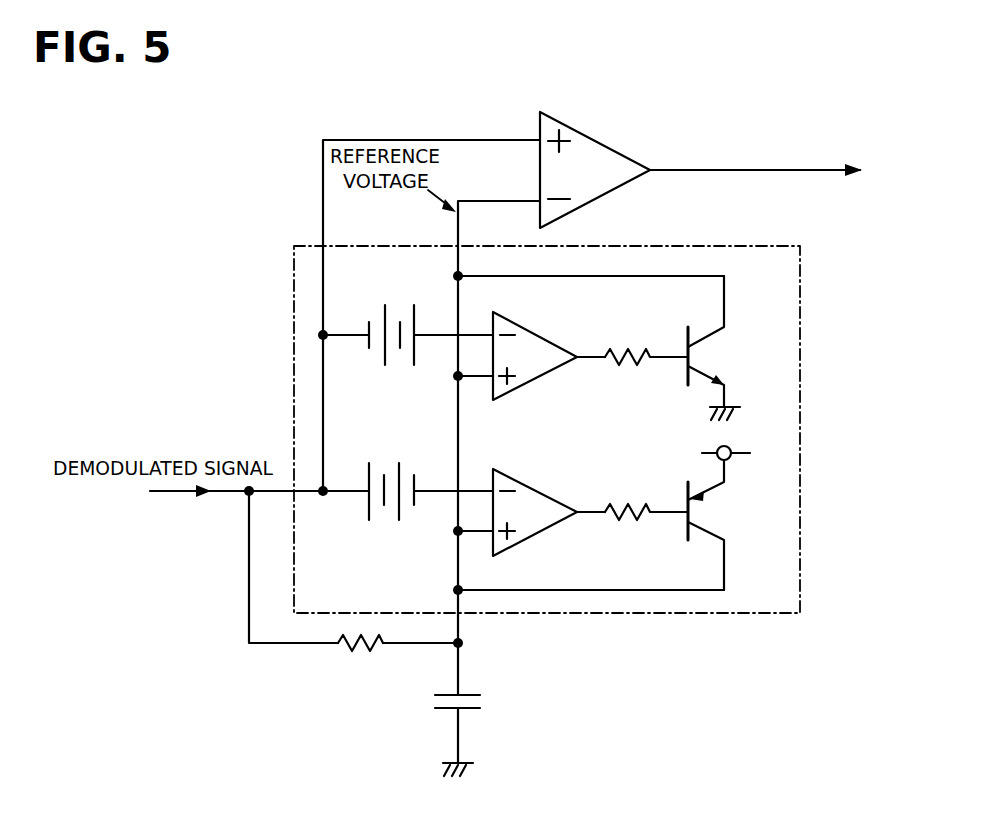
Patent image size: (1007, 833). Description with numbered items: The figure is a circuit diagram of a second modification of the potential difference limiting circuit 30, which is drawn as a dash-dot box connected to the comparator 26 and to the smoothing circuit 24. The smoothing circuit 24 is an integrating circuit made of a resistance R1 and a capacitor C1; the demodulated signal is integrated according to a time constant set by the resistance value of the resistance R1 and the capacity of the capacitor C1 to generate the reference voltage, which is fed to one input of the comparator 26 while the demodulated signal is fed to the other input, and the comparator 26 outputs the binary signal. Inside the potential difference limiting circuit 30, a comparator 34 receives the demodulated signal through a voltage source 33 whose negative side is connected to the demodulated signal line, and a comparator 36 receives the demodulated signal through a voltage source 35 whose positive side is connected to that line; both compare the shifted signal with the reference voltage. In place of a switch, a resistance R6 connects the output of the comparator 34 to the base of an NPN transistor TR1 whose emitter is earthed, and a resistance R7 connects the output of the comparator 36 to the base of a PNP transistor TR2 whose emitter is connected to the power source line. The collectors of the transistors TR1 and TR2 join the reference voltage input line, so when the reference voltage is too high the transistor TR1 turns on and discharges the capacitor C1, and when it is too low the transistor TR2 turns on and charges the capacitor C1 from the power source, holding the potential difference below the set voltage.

The comparator 26 is at (599, 139).
The potential difference limiting circuit 30 is at (284, 292).
The voltage source 33 is at (381, 306).
The comparator 34 is at (532, 330).
The voltage source 35 is at (381, 463).
The comparator 36 is at (532, 486).
The resistance R6 is at (622, 343).
The resistance R7 is at (622, 505).
The NPN transistor TR1 is at (718, 358).
The PNP transistor TR2 is at (718, 512).
The smoothing circuit 24 is at (399, 705).
The resistance R1 is at (357, 650).
The capacitor C1 is at (431, 697).